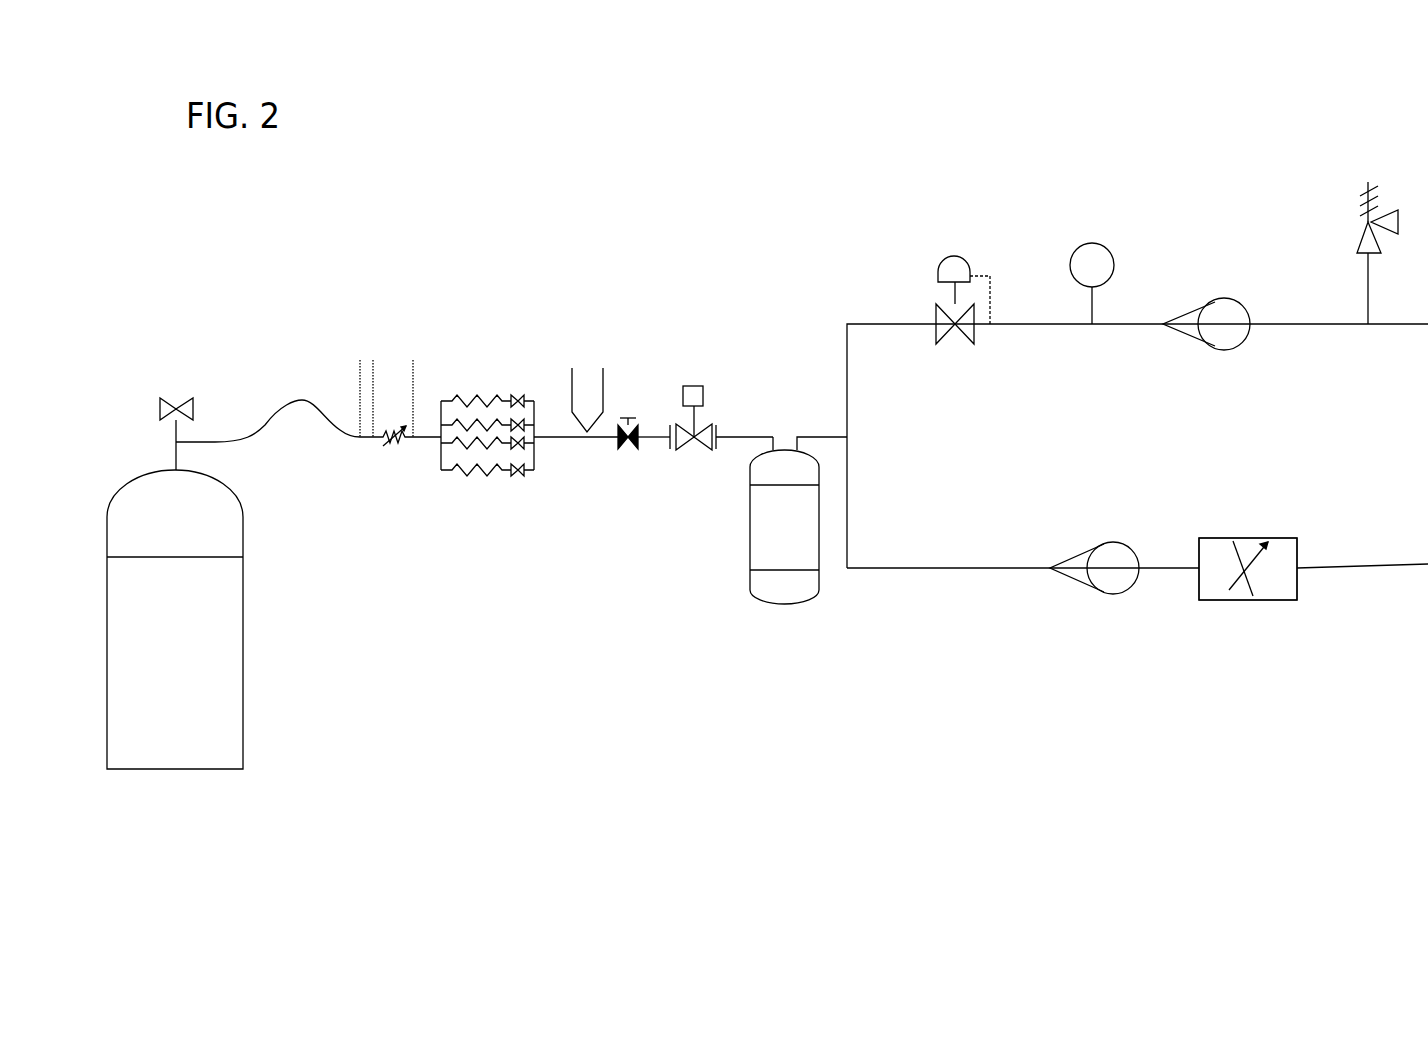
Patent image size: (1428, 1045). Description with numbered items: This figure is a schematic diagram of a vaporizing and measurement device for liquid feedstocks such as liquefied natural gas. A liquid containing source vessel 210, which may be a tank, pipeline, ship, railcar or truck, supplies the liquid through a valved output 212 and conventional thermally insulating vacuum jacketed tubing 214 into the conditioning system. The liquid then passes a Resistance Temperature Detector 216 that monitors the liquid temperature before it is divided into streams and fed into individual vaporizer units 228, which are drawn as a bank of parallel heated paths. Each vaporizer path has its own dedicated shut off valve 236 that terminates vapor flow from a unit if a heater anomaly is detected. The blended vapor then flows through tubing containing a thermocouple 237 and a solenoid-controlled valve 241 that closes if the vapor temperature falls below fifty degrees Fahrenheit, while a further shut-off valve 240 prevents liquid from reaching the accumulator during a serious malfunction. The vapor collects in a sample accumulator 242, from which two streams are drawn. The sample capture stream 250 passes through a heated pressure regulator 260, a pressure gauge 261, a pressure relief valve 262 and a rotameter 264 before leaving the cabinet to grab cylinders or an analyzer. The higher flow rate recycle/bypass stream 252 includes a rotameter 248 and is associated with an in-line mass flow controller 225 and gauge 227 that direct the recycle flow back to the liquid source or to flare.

The liquid containing source vessel 210 is at (223, 644).
The valved output 212 is at (160, 405).
The vacuum jacketed tubing 214 is at (272, 426).
The Resistance Temperature Detector (RTD) 216 is at (381, 443).
The vaporizer units 228 is at (465, 397).
The shut off valve 236 is at (522, 400).
The thermocouple 237 is at (597, 370).
The shut-off valve 240 is at (632, 447).
The solenoid-controlled valve 241 is at (700, 448).
The sample accumulator 242 is at (750, 558).
The sample capture stream 250 is at (858, 324).
The sample recycle/bypass stream 252 is at (935, 570).
The heated pressure regulator 260 is at (955, 258).
The pressure gauge 261 is at (1105, 243).
The pressure relief valve 262 is at (1360, 212).
The rotameter 264 is at (1226, 297).
The rotameter 248 is at (1113, 595).
The mass flow controller 225 is at (1270, 600).
The gauge 227 is at (1248, 569).